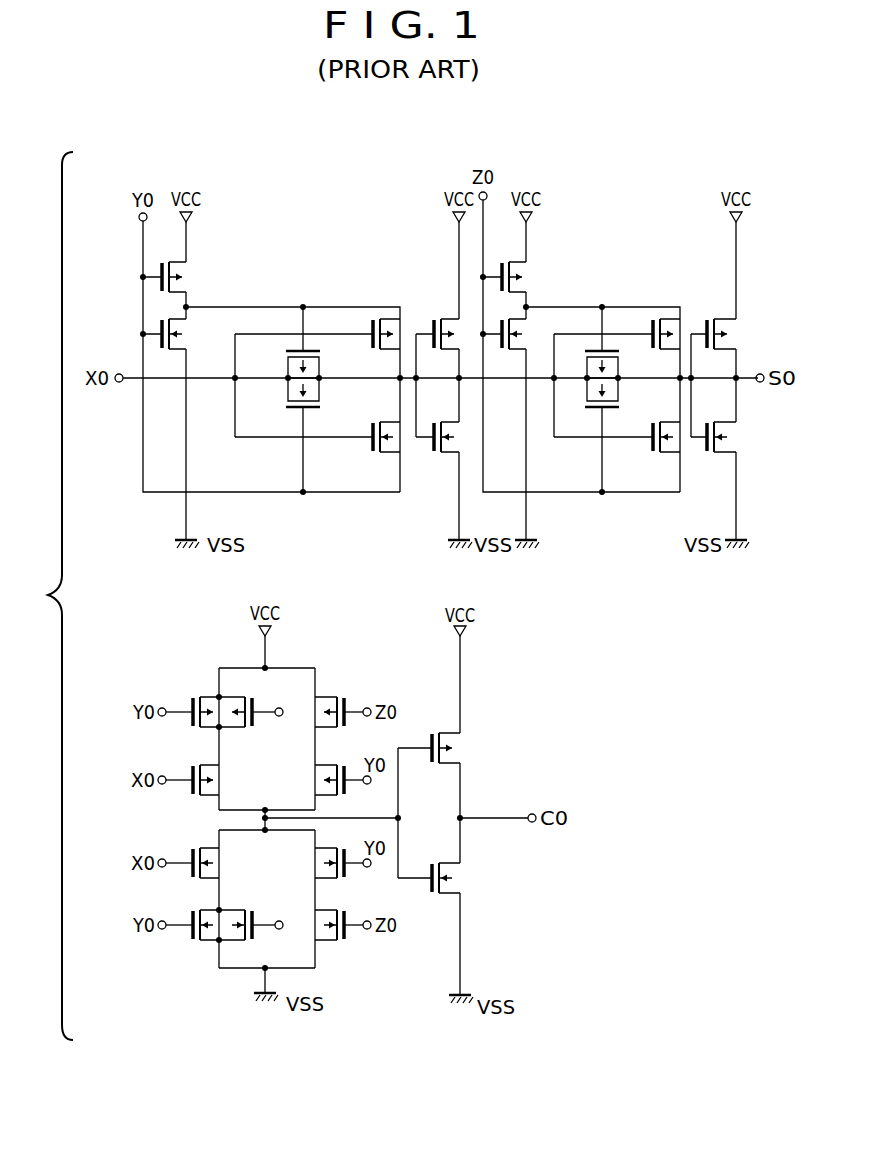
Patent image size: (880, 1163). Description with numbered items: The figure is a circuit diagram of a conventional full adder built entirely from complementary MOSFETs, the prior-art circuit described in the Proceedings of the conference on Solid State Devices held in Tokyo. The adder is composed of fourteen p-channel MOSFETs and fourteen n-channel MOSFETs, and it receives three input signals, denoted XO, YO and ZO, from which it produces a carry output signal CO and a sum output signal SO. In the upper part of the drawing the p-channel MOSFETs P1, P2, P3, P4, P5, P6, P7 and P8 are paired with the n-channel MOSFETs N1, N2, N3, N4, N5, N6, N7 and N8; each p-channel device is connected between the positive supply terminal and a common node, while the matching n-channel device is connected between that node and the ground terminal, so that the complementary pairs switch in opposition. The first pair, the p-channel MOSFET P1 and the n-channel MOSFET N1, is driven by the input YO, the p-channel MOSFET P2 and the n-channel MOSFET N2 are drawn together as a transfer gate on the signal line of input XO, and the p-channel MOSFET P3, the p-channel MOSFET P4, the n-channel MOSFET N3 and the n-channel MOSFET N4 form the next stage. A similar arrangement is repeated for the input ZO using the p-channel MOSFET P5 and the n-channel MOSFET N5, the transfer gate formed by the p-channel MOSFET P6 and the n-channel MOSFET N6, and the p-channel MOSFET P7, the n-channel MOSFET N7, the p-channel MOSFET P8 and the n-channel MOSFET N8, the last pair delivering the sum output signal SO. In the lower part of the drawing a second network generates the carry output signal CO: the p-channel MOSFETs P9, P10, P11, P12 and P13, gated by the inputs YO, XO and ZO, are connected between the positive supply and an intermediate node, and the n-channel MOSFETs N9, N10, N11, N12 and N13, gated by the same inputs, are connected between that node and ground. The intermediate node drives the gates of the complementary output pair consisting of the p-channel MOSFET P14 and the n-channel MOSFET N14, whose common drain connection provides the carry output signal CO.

The p-channel MOSFET P1 is at (198, 278).
The n-channel MOSFET N1 is at (189, 337).
The p-channel MOSFET P2 is at (324, 368).
The n-channel MOSFET N2 is at (324, 396).
The p-channel MOSFET P3 is at (389, 299).
The n-channel MOSFET N3 is at (368, 446).
The p-channel MOSFET P4 is at (447, 313).
The n-channel MOSFET N4 is at (438, 460).
The p-channel MOSFET P5 is at (535, 278).
The n-channel MOSFET N5 is at (506, 352).
The p-channel MOSFET P6 is at (619, 345).
The n-channel MOSFET N6 is at (586, 418).
The p-channel MOSFET P7 is at (689, 325).
The n-channel MOSFET N7 is at (645, 450).
The p-channel MOSFET P8 is at (741, 339).
The n-channel MOSFET N8 is at (740, 438).
The p-channel MOSFET P9 is at (188, 702).
The p-channel MOSFET P10 is at (263, 701).
The p-channel MOSFET P11 is at (229, 781).
The p-channel MOSFET P12 is at (342, 690).
The p-channel MOSFET P13 is at (316, 776).
The p-channel MOSFET P14 is at (467, 749).
The n-channel MOSFET N9 is at (222, 864).
The n-channel MOSFET N10 is at (186, 940).
The n-channel MOSFET N11 is at (245, 898).
The n-channel MOSFET N12 is at (350, 878).
The n-channel MOSFET N13 is at (335, 951).
The n-channel MOSFET N14 is at (463, 879).